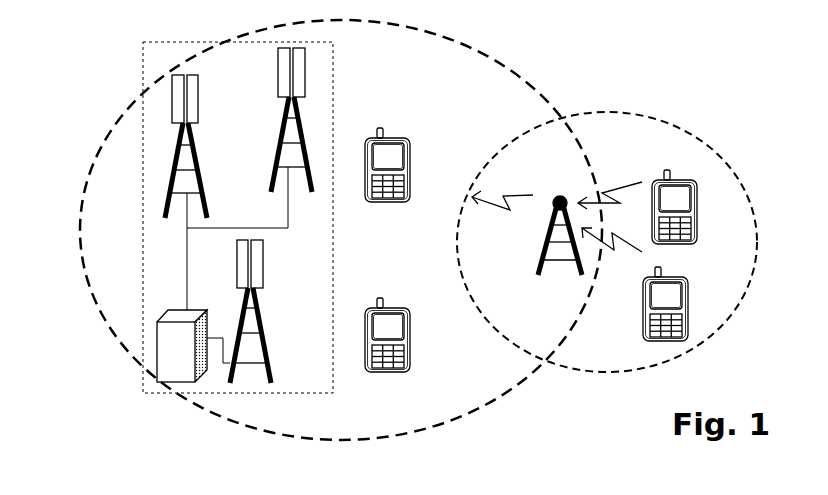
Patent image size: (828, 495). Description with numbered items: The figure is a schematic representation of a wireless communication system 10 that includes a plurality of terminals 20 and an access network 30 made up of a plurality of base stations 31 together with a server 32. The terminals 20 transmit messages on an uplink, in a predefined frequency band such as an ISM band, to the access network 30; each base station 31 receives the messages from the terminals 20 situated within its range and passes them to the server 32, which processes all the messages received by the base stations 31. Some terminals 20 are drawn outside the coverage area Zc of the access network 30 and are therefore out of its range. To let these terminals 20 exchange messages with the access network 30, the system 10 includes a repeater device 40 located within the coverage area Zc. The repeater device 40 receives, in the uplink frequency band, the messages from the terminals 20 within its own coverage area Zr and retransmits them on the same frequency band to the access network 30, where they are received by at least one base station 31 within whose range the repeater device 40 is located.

The wireless communication system 10 is at (118, 64).
The terminals 20 is at (412, 167).
The access network 30 is at (238, 394).
The base station 31 is at (198, 97).
The server 32 is at (155, 352).
The repeater device 40 is at (555, 202).
The coverage area Zc is at (515, 388).
The coverage area Zr is at (705, 140).